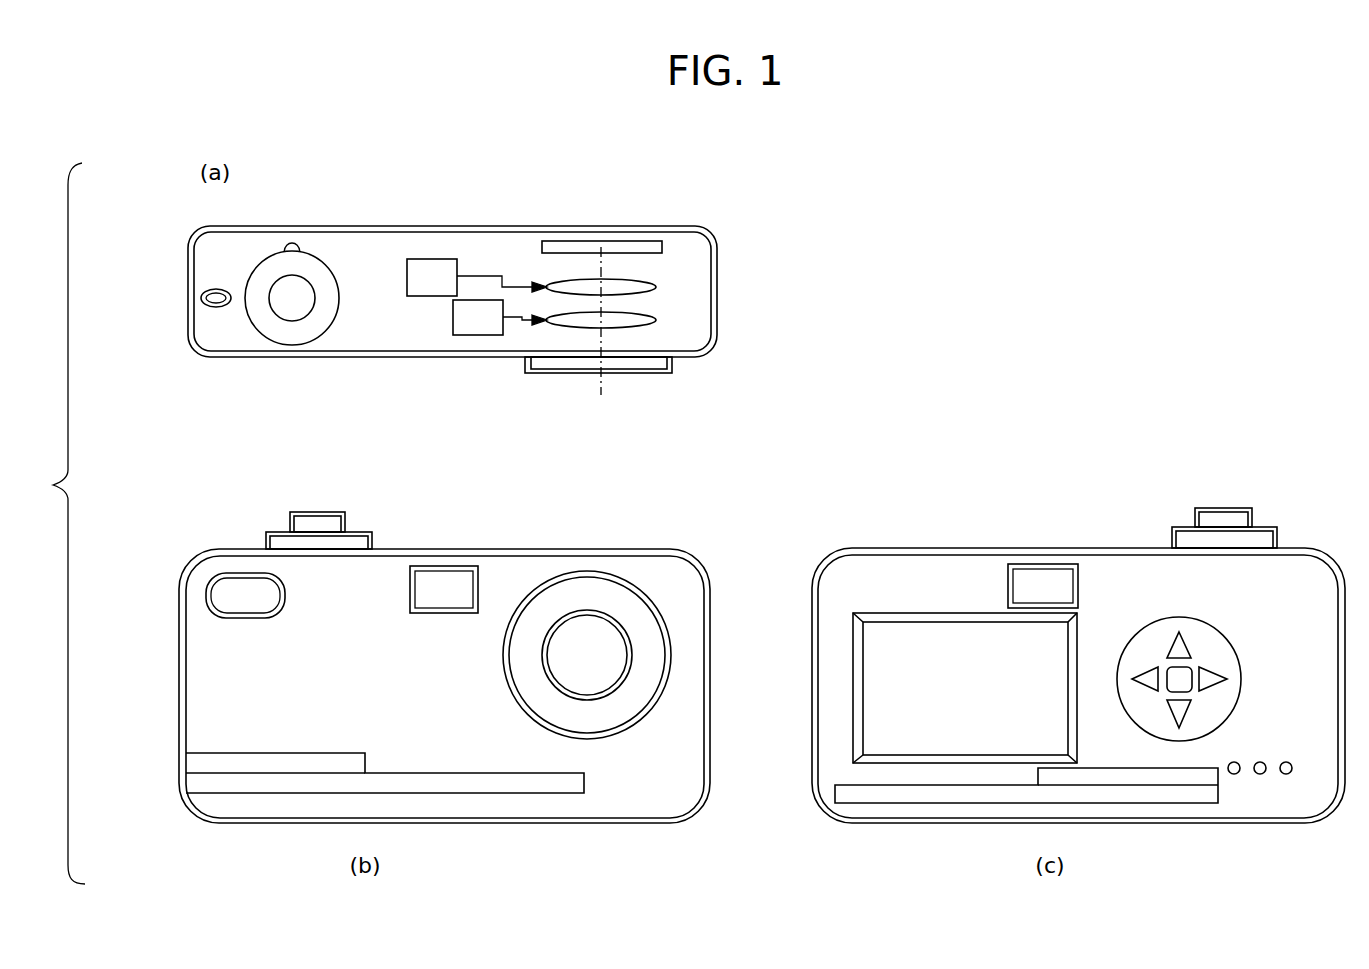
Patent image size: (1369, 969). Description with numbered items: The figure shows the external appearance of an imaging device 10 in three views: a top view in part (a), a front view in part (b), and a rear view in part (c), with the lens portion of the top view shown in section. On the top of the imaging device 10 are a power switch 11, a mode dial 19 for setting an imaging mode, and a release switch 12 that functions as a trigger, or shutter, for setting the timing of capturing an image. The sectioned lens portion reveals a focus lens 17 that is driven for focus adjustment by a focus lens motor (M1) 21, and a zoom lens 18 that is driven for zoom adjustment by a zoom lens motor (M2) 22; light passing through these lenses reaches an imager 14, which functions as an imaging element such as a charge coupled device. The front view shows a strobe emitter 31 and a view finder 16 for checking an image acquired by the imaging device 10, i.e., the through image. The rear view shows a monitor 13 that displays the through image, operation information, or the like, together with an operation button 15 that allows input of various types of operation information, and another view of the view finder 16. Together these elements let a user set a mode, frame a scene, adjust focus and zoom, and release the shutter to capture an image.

The imaging device 10 is at (1067, 272).
The power switch 11 is at (205, 292).
The release switch 12 is at (303, 308).
The monitor 13 is at (897, 627).
The imager 14 is at (662, 248).
The operation button 15 is at (1227, 671).
The view finder 16 is at (450, 566).
The focus lens 17 is at (656, 287).
The zoom lens 18 is at (656, 320).
The mode dial 19 is at (277, 532).
The focus lens motor 21 is at (430, 259).
The zoom lens motor 22 is at (472, 336).
The strobe emitter 31 is at (214, 593).